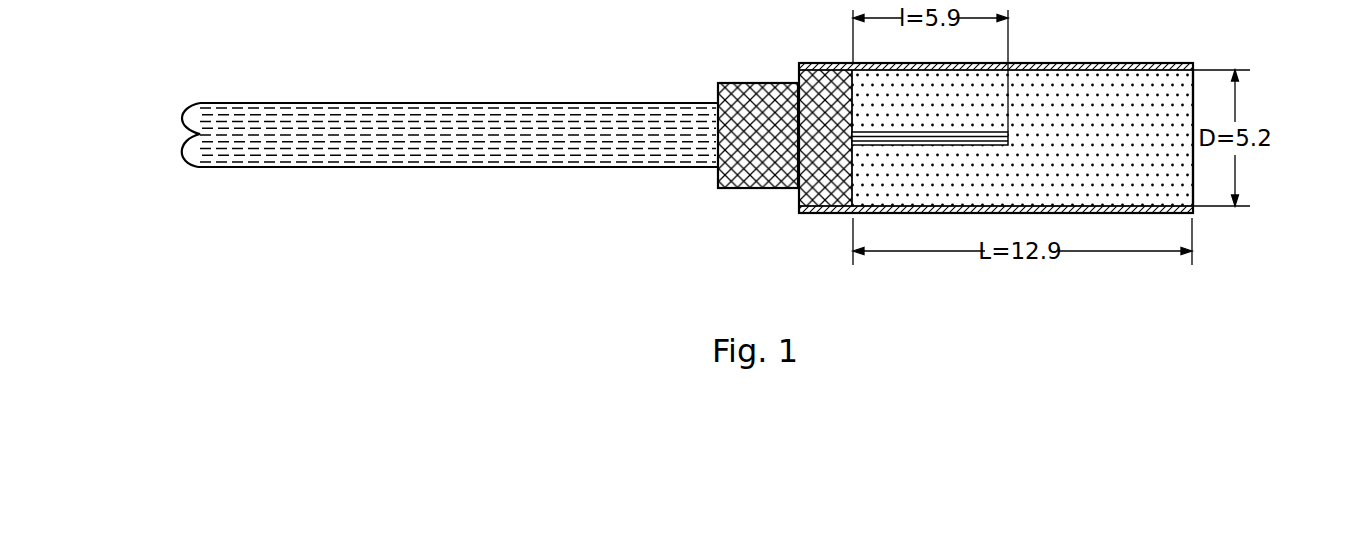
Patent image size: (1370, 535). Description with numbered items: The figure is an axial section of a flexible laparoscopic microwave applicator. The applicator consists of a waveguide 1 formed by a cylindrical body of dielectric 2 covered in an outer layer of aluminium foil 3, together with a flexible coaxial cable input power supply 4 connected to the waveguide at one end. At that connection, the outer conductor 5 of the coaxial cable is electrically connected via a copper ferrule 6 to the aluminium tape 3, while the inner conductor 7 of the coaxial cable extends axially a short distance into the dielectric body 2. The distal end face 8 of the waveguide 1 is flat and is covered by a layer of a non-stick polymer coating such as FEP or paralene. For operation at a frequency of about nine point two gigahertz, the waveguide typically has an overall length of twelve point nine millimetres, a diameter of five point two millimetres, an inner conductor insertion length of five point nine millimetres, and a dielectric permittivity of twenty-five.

The waveguide 1 is at (1047, 159).
The dielectric body 2 is at (1183, 168).
The aluminium foil outer layer 3 is at (1047, 110).
The flexible coaxial cable input power supply 4 is at (576, 118).
The outer conductor 5 is at (450, 108).
The copper ferrule 6 is at (763, 188).
The inner conductor 7 is at (882, 148).
The distal end face 8 is at (1200, 105).